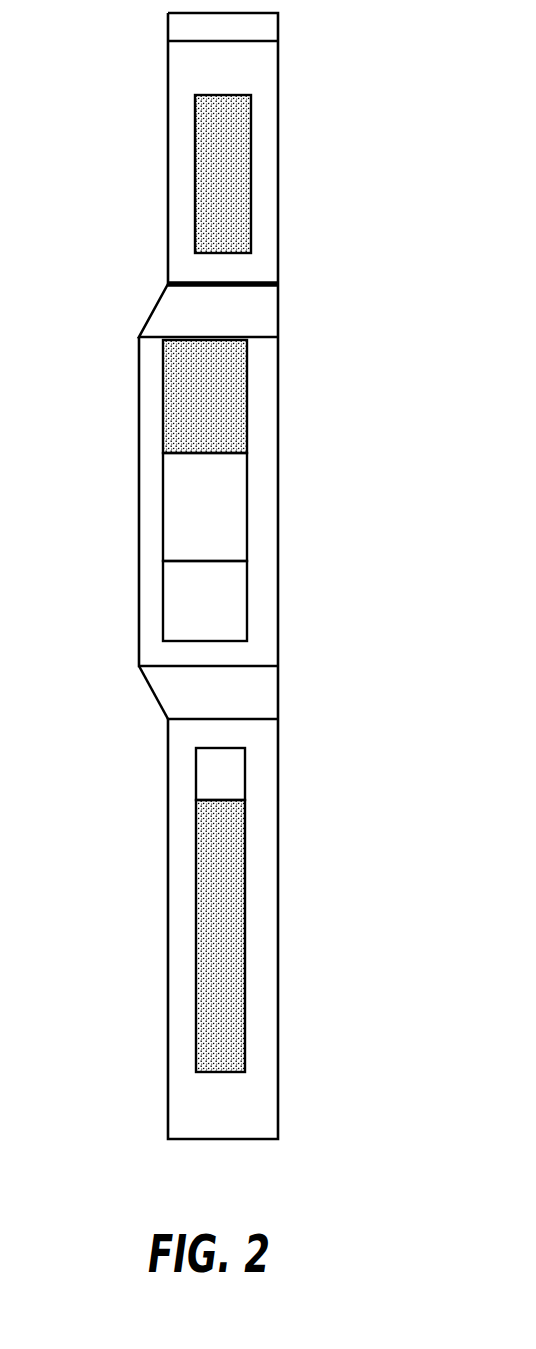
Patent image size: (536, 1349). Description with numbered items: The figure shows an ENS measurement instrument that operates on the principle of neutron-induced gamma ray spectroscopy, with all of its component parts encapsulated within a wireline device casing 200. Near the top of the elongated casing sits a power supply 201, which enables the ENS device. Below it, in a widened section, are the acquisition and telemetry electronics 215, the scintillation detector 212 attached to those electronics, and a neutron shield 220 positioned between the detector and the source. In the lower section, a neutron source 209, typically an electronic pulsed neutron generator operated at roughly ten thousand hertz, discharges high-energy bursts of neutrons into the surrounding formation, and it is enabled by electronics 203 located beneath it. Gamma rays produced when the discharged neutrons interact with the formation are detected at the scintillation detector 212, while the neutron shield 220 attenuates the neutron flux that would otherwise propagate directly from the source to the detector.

The wireline device casing 200 is at (270, 145).
The power supply 201 is at (222, 173).
The acquisition and telemetry electronics 215 is at (185, 410).
The scintillation detector 212 is at (185, 517).
The neutron shield 220 is at (185, 617).
The neutron source 209 is at (217, 783).
The electronics 203 is at (217, 973).